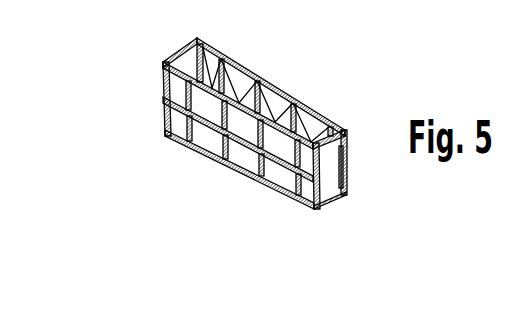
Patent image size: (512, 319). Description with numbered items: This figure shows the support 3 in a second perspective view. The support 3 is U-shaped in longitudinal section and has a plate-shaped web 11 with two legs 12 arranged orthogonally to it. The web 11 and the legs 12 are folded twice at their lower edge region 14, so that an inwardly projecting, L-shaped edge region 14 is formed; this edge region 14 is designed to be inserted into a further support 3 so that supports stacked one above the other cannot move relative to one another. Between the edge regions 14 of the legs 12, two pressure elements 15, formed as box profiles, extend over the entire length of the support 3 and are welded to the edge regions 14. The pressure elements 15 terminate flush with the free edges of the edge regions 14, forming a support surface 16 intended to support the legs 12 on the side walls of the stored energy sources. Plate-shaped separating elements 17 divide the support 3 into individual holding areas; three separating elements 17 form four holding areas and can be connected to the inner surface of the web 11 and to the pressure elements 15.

The support 3 is at (114, 166).
The web 11 is at (228, 131).
The legs 12 is at (173, 56).
The edge region 14 is at (320, 205).
The pressure elements 15 is at (300, 152).
The support surface 16 is at (176, 142).
The separating elements 17 is at (237, 87).